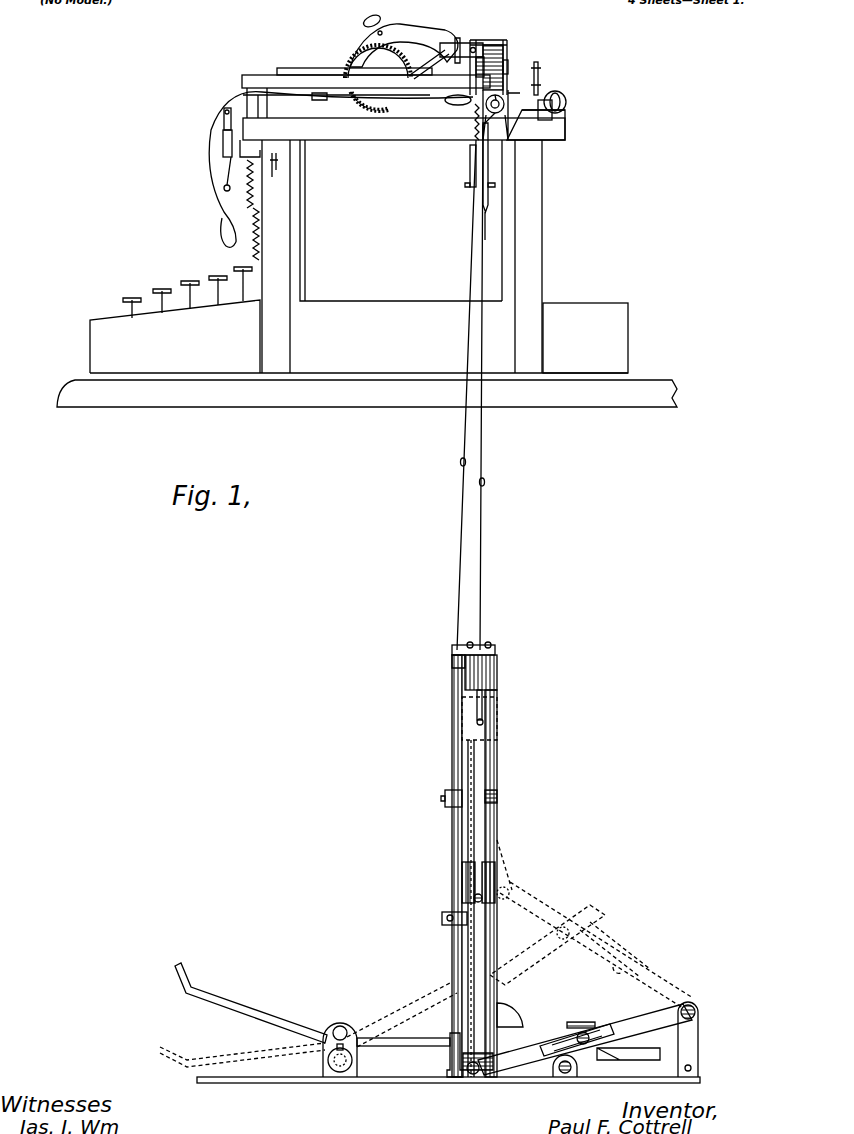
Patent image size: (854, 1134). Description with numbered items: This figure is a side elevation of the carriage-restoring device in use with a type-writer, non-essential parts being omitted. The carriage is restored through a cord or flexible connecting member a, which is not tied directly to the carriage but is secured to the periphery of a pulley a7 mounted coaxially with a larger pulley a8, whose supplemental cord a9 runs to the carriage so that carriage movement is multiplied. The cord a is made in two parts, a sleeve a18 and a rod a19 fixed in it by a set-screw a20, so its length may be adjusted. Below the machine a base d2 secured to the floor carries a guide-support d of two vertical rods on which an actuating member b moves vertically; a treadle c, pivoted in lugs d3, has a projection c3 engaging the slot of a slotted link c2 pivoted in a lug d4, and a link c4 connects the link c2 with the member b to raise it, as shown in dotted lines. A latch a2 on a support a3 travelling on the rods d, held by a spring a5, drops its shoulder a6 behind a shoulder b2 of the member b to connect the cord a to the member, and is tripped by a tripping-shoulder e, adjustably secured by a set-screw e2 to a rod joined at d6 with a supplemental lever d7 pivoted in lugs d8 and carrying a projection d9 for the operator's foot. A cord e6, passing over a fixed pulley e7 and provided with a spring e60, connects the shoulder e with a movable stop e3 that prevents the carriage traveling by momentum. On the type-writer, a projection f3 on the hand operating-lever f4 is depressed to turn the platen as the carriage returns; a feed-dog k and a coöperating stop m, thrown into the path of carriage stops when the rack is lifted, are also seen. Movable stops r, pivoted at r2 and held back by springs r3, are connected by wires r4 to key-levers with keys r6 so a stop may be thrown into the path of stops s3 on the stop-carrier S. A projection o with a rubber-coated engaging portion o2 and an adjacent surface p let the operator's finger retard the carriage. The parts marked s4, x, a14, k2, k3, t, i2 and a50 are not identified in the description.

The stop-carrier S is at (216, 106).
The stops s3 is at (222, 148).
The cable clamp s4 is at (222, 122).
The movable stops r is at (229, 165).
The pivot r2 is at (274, 160).
The springs r3 is at (255, 240).
The wires r4 is at (310, 225).
The key r6 is at (215, 276).
The projection o is at (236, 175).
The engaging portion o2 is at (243, 200).
The surface p is at (228, 216).
The projection f3 is at (440, 44).
The hand operating-lever f4 is at (360, 53).
The gear wheel x is at (397, 78).
The pulley a7 is at (492, 45).
The larger pulley a8 is at (503, 52).
The supplemental cord a9 is at (508, 66).
The cable end a14 is at (445, 101).
The feed-dog k is at (503, 113).
The bracket k2 is at (553, 112).
The base bracket k3 is at (540, 118).
The pin t is at (536, 62).
The coöperating stop m is at (558, 94).
The plate i2 is at (565, 118).
The movable stop e3 is at (478, 105).
The spring e60 is at (470, 165).
The sleeve a18 is at (488, 162).
The rod a19 is at (485, 242).
The set-screw a20 is at (495, 185).
The cord e6 is at (460, 551).
The cord a is at (482, 530).
The cap a50 is at (452, 658).
The support a3 is at (497, 670).
The latch a2 is at (497, 700).
The latch projection a6 is at (477, 707).
The spring a5 is at (452, 763).
The tripping-shoulder e is at (497, 793).
The set-screw e2 is at (444, 800).
The fixed pulley e7 is at (442, 920).
The guide-support d is at (480, 823).
The actuating member b is at (495, 876).
The shoulder b2 is at (462, 880).
The treadle c is at (258, 1006).
The slotted link c2 is at (548, 898).
The projection c3 is at (570, 1026).
The link c4 is at (505, 845).
The base d2 is at (378, 1083).
The lugs d3 is at (334, 1077).
The lug d4 is at (698, 1040).
The connection d6 is at (448, 1060).
The supplemental lever d7 is at (537, 1067).
The lugs d8 is at (565, 1077).
The projection d9 is at (583, 1032).